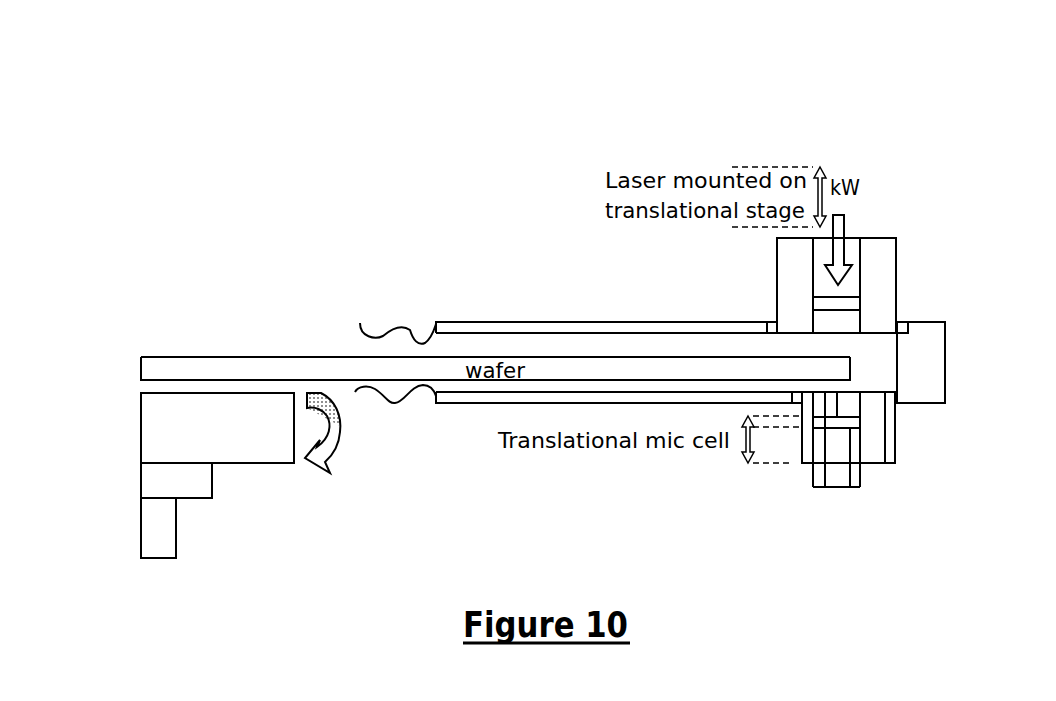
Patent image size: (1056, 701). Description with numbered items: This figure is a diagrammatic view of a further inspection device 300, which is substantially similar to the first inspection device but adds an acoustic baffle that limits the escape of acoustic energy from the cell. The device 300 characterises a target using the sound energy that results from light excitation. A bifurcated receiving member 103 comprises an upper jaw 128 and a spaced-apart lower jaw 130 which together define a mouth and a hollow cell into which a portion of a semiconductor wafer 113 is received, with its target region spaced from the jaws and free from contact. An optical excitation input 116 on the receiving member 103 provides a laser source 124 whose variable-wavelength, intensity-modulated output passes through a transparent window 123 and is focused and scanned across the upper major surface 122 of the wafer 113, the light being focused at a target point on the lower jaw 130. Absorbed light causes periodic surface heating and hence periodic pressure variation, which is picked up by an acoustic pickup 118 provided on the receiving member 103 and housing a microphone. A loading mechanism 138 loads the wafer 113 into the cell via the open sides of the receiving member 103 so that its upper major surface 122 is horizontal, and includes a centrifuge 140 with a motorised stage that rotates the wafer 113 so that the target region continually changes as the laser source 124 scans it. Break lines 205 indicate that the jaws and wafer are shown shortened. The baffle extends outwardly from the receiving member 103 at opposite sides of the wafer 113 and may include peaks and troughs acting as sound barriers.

The inspection device 300 is at (885, 95).
The optical excitation input 116 is at (848, 238).
The laser source 124 is at (838, 250).
The transparent window 123 is at (815, 297).
The receiving member 103 is at (932, 347).
The upper jaw 128 is at (482, 321).
The lower jaw 130 is at (472, 405).
The upper major surface 122 is at (270, 356).
The semiconductor wafer 113 is at (223, 368).
The break lines 205 is at (377, 323).
The centrifuge 140 is at (177, 452).
The loading mechanism 138 is at (165, 488).
The acoustic pickup 118 is at (837, 405).